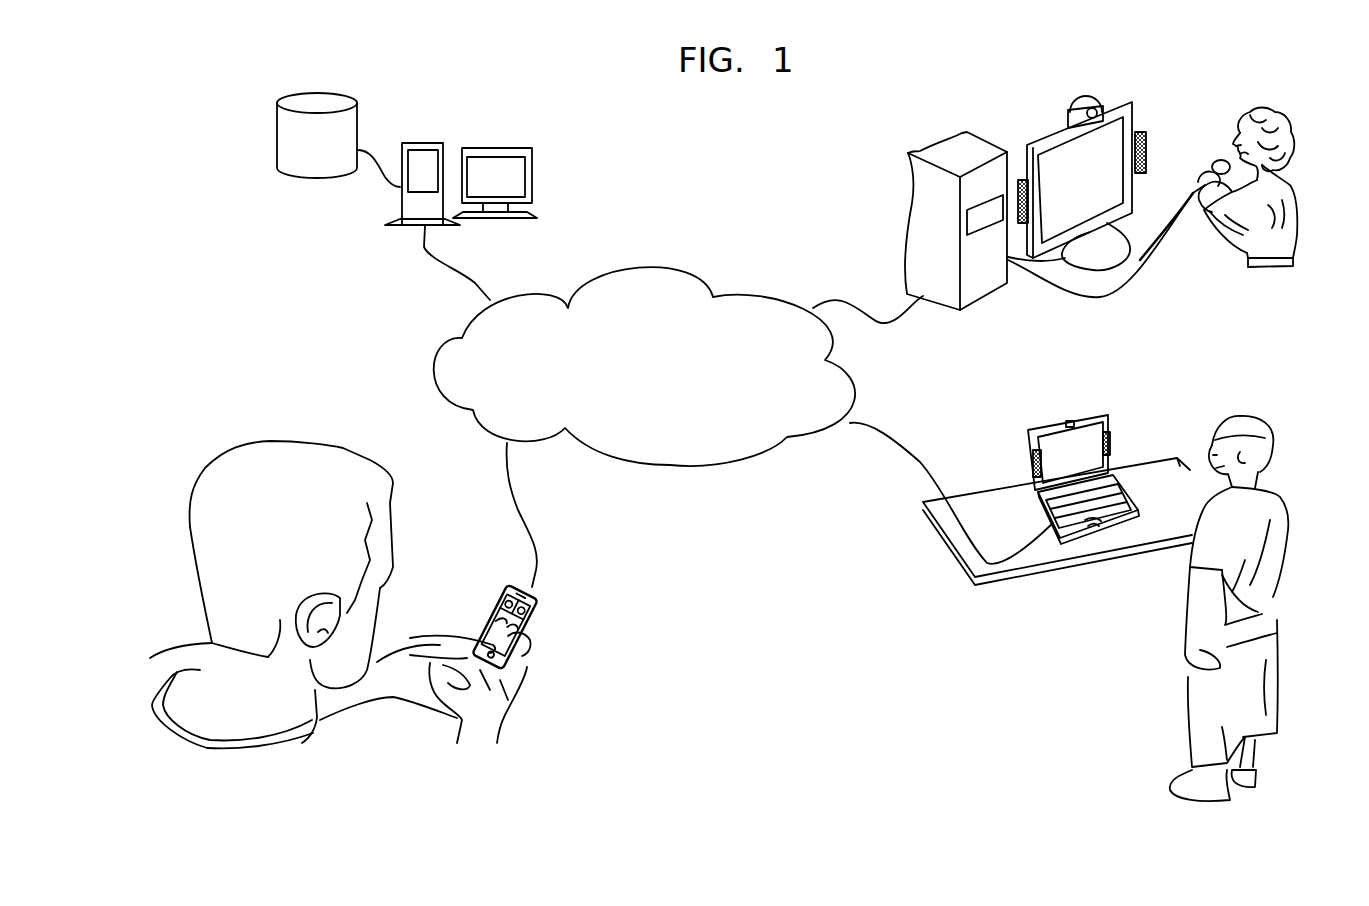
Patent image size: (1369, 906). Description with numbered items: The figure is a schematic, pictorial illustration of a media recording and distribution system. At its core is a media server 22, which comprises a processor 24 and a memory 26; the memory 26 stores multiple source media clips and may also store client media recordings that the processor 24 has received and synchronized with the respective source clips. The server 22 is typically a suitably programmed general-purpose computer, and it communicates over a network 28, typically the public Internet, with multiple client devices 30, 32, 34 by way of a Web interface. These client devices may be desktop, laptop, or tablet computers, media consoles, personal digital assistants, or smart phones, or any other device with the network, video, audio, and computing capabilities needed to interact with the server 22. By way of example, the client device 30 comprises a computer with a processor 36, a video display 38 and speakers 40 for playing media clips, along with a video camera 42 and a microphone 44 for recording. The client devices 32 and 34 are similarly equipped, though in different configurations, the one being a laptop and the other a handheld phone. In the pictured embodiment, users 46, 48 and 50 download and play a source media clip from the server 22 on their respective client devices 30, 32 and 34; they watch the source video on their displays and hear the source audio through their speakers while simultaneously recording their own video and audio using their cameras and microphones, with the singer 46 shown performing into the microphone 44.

The media server 22 is at (263, 97).
The processor 24 is at (430, 143).
The memory 26 is at (326, 101).
The network 28 is at (677, 264).
The client device 30 is at (893, 147).
The client device 32 is at (1008, 543).
The client device 34 is at (528, 663).
The processor 36 is at (982, 285).
The video display 38 is at (1112, 135).
The speakers 40 is at (1025, 178).
The video camera 42 is at (1081, 100).
The microphone 44 is at (1216, 163).
The user 46 is at (1270, 110).
The user 48 is at (1247, 417).
The user 50 is at (287, 457).